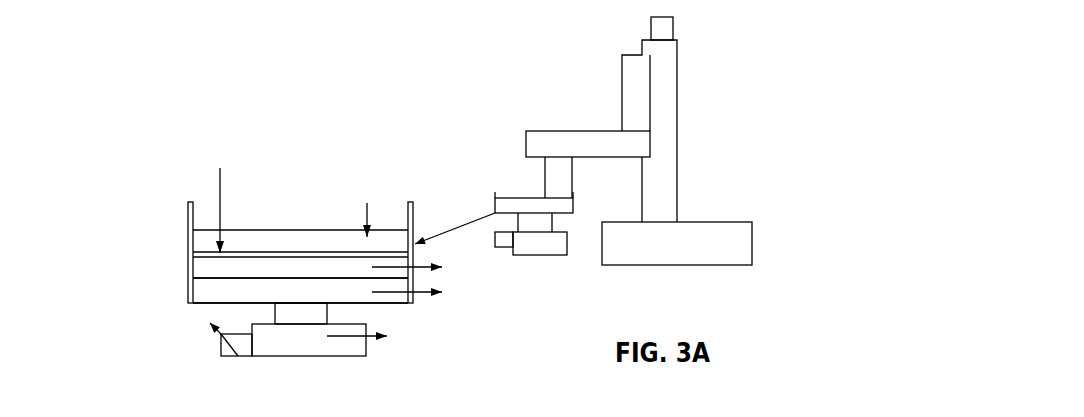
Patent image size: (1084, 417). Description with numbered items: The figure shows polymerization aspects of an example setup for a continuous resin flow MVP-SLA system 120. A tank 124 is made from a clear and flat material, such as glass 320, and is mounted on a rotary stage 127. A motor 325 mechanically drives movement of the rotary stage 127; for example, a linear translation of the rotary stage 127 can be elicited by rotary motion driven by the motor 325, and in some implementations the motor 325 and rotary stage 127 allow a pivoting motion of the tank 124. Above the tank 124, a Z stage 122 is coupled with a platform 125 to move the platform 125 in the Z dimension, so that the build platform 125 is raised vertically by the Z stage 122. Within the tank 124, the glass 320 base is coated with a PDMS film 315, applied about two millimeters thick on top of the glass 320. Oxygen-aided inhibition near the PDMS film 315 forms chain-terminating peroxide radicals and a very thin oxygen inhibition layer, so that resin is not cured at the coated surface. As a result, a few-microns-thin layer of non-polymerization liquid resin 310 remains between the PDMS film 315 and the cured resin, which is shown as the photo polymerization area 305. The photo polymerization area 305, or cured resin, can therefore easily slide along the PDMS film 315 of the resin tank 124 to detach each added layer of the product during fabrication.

The continuous resin flow MVP-SLA system 120 is at (120, 63).
The Z stage 122 is at (678, 40).
The tank 124 is at (188, 205).
The platform 125 is at (563, 131).
The rotary stage 127 is at (308, 357).
The photo polymerization area 305 is at (198, 238).
The non-polymerization liquid resin 310 is at (197, 255).
The PDMS film 315 is at (198, 267).
The glass 320 is at (207, 288).
The motor 325 is at (220, 347).